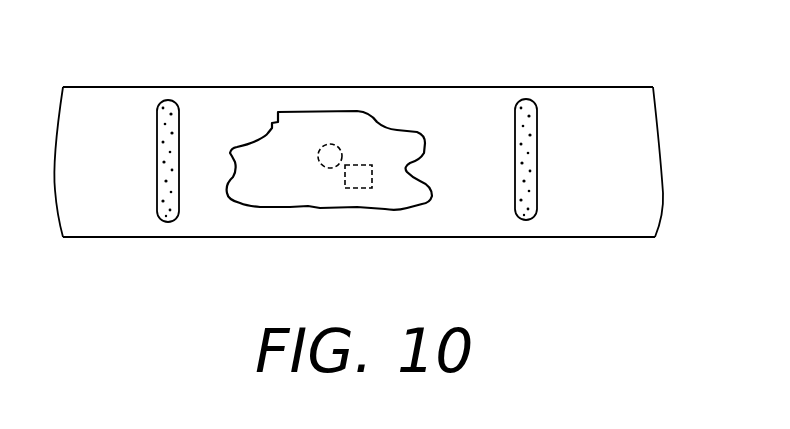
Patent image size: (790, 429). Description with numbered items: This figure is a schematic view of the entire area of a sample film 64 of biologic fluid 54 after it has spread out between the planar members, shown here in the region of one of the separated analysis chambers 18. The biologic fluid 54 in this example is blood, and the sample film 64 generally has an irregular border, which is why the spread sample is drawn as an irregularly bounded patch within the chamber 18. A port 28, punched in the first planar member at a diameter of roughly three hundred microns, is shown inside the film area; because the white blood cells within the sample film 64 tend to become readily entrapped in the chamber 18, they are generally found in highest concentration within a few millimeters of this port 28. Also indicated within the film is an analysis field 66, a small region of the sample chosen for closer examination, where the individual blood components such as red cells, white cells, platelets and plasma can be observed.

The analysis chamber 18 is at (482, 85).
The sample film 64 is at (365, 109).
The biologic fluid 54 is at (263, 208).
The port 28 is at (322, 146).
The analysis field 66 is at (360, 188).